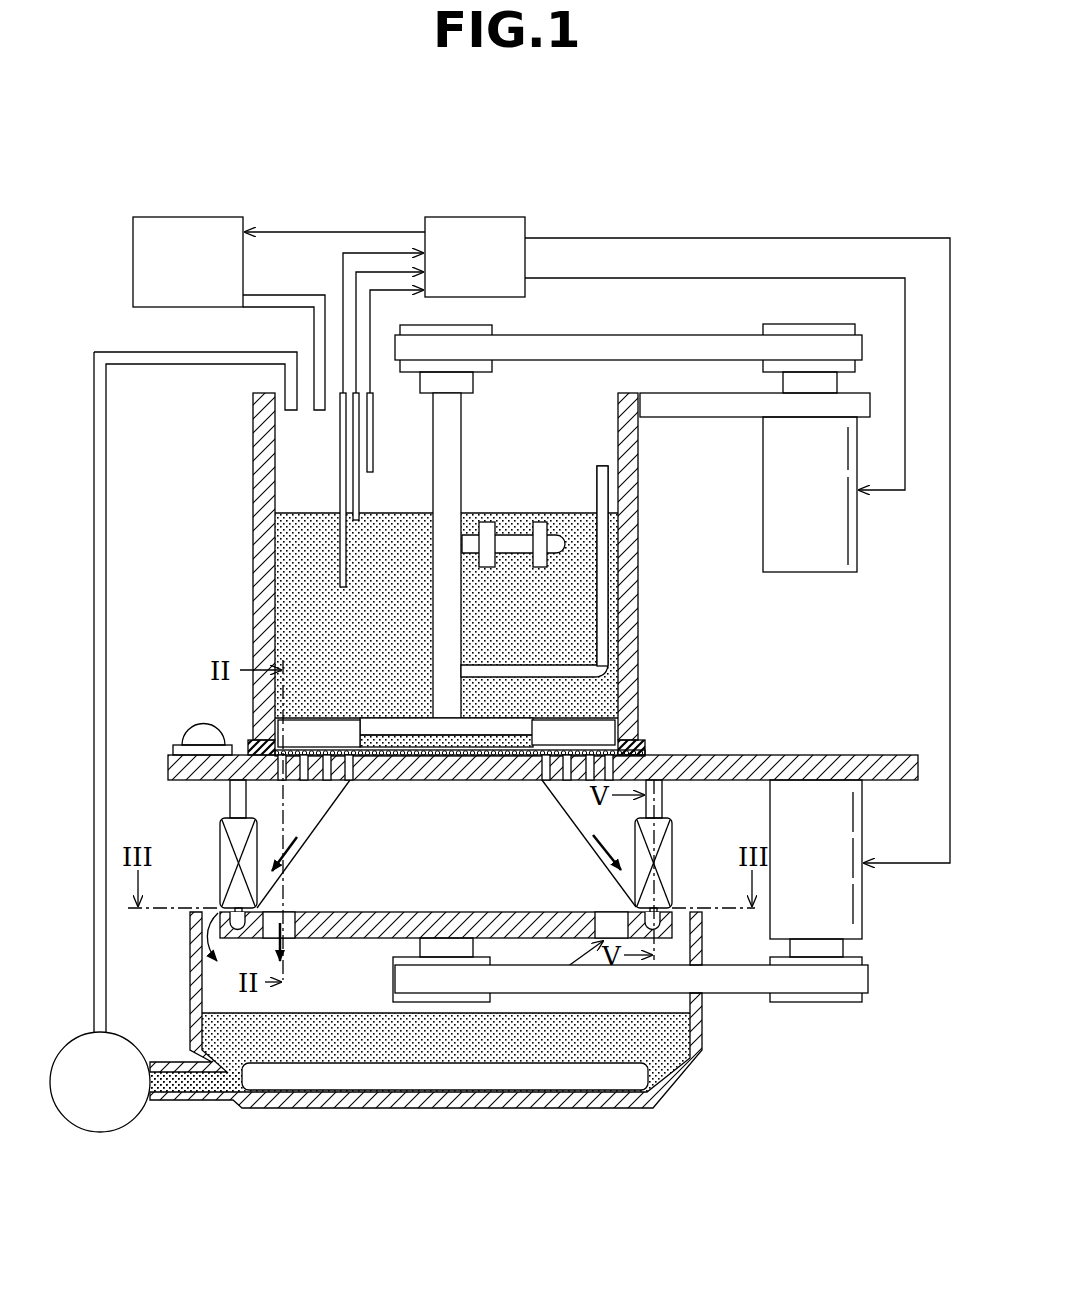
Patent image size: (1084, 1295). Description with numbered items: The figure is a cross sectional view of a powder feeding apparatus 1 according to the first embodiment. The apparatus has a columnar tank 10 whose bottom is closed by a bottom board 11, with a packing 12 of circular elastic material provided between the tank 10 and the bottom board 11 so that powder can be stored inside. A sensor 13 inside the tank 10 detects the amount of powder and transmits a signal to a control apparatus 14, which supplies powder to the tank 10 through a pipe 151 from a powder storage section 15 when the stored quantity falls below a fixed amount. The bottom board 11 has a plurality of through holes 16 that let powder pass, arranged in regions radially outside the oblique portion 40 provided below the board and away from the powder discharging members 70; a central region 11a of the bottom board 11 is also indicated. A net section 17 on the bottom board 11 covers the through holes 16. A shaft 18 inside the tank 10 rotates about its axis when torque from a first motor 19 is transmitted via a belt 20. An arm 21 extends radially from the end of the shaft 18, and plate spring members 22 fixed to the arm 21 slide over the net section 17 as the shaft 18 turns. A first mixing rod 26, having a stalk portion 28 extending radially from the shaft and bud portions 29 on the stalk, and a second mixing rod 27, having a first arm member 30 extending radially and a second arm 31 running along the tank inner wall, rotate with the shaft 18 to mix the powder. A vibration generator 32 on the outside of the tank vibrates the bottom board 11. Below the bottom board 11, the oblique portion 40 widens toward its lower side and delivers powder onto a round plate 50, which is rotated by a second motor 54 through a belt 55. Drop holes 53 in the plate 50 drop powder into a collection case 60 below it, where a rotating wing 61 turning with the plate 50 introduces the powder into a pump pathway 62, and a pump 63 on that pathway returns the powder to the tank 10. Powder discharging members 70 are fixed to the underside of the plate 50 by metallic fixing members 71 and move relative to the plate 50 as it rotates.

The powder feeding apparatus 1 is at (642, 173).
The tank 10 is at (265, 566).
The bottom board 11 is at (543, 819).
The central portion of base plate 11a is at (515, 782).
The packing 12 is at (650, 746).
The sensor 13 is at (367, 419).
The control apparatus 14 is at (470, 217).
The powder storage section 15 is at (189, 217).
The pipe 151 is at (291, 295).
The through holes 16 is at (304, 772).
The net section 17 is at (382, 730).
The shaft 18 is at (443, 478).
The first motor 19 is at (808, 572).
The belt 20 is at (610, 335).
The arm 21 is at (417, 743).
The plate spring members 22 is at (296, 728).
The first mixing rod 26 is at (520, 488).
The second mixing rod 27 is at (603, 571).
The stalk portion 28 is at (514, 545).
The bud portions 29 is at (570, 458).
The first arm member 30 is at (601, 632).
The second arm 31 is at (606, 592).
The vibration generator 32 is at (186, 736).
The oblique portion 40 is at (270, 880).
The plate 50 is at (313, 940).
The drop holes 53 is at (270, 932).
The second motor 54 is at (863, 918).
The belt 55 is at (737, 994).
The collection case 60 is at (485, 1108).
The rotating wing 61 is at (326, 1090).
The pump pathway 62 is at (157, 364).
The pump 63 is at (100, 1115).
The powder discharging member 70 is at (237, 835).
The fixing member 71 is at (236, 790).